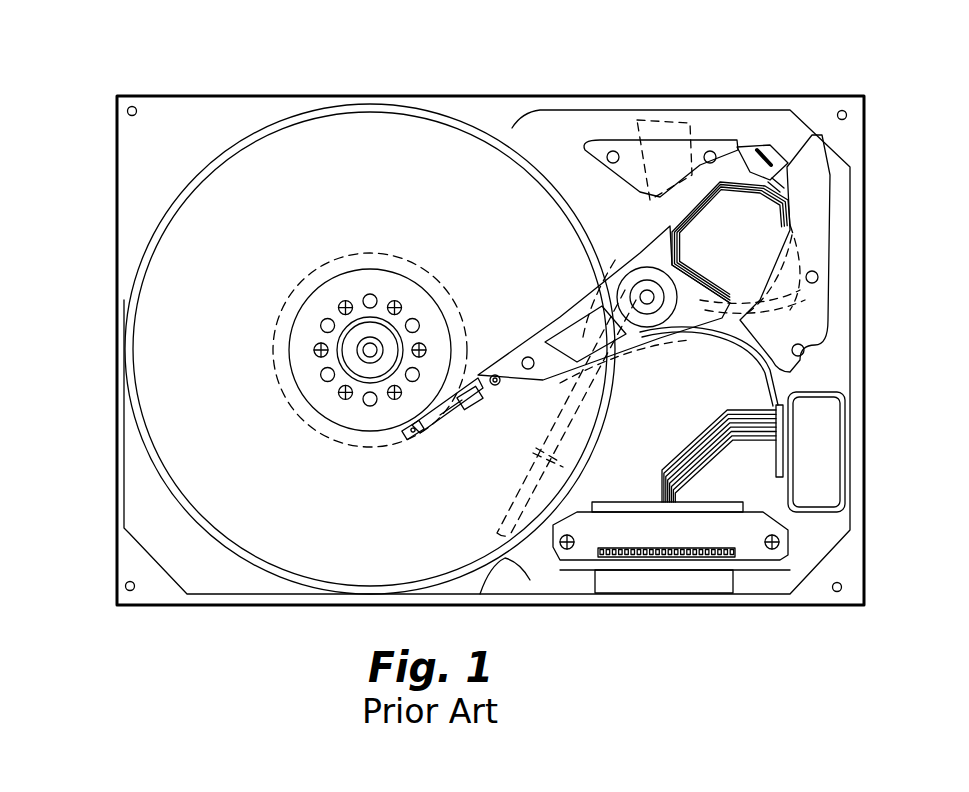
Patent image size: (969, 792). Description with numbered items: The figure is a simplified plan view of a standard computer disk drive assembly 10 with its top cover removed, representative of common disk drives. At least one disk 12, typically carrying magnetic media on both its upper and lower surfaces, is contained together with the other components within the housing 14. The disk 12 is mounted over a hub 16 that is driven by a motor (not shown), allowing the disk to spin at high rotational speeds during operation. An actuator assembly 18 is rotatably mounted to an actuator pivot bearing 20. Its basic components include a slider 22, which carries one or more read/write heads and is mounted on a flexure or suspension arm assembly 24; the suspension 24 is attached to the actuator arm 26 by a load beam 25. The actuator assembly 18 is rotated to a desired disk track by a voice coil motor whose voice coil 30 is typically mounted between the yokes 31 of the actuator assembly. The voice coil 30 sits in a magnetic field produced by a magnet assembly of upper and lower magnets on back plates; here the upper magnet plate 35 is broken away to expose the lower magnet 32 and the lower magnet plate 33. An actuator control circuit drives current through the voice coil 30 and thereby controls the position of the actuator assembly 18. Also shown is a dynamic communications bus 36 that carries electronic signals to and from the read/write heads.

The disk drive assembly 10 is at (75, 128).
The disk 12 is at (238, 246).
The housing 14 is at (743, 123).
The hub 16 is at (373, 330).
The actuator assembly 18 is at (567, 282).
The actuator pivot bearing 20 is at (637, 287).
The slider 22 is at (413, 445).
The suspension arm assembly 24 is at (457, 407).
The load beam 25 is at (478, 402).
The actuator arm 26 is at (535, 348).
The voice coil 30 is at (732, 200).
The yokes 31 is at (670, 225).
The lower magnet 32 is at (697, 173).
The lower magnet plate 33 is at (660, 180).
The upper magnet plate 35 is at (805, 318).
The dynamic communications bus 36 is at (765, 372).